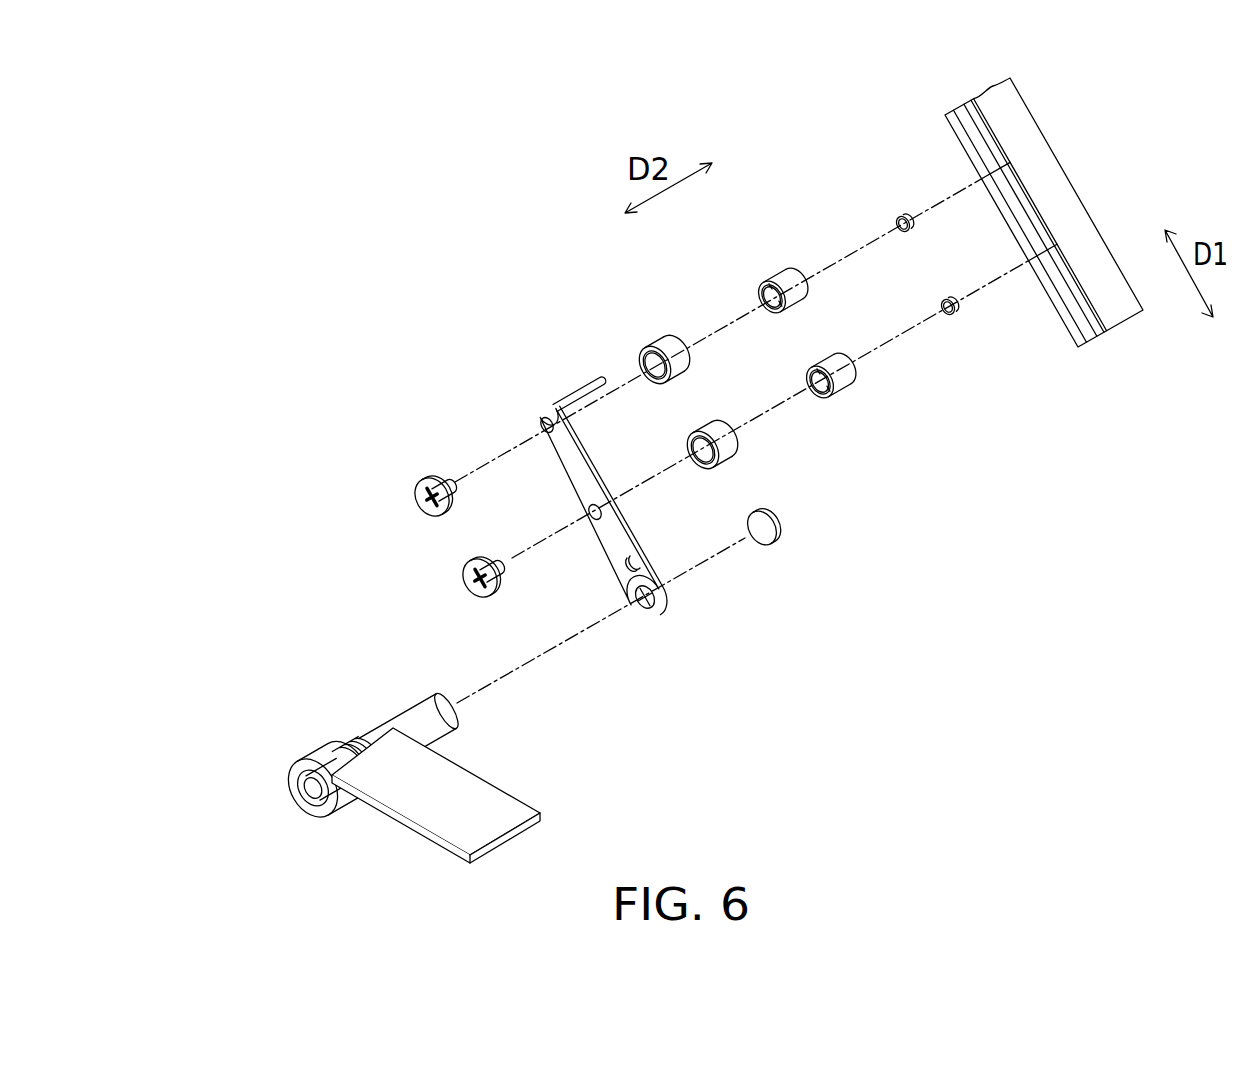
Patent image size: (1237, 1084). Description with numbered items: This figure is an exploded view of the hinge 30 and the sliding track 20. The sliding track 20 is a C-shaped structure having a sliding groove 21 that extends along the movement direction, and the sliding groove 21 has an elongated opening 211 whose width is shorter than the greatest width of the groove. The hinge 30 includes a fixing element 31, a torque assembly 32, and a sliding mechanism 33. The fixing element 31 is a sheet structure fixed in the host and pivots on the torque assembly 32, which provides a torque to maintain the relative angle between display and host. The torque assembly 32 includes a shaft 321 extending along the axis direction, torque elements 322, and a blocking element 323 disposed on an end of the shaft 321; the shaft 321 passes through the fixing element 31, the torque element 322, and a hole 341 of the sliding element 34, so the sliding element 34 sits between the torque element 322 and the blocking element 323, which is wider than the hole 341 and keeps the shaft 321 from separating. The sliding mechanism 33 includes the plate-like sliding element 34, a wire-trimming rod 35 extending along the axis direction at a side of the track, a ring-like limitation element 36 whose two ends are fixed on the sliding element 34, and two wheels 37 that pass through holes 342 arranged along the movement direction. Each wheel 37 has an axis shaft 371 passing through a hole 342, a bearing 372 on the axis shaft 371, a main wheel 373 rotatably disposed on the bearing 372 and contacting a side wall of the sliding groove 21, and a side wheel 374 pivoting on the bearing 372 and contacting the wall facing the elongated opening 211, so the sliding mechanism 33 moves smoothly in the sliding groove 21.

The sliding track 20 is at (995, 226).
The sliding groove 21 is at (1080, 316).
The elongated opening 211 is at (983, 140).
The hinge 30 is at (397, 314).
The fixing element 31 is at (498, 808).
The torque assembly 32 is at (459, 741).
The shaft 321 is at (458, 710).
The torque elements 322 is at (342, 735).
The blocking element 323 is at (762, 545).
The sliding mechanism 33 is at (532, 343).
The sliding element 34 is at (549, 520).
The hole 341 is at (643, 615).
The holes 342 is at (540, 426).
The wire-trimming rod 35 is at (597, 388).
The limitation element 36 is at (622, 570).
The wheels 37 is at (414, 487).
The axis shaft 371 is at (440, 477).
The bearing 372 is at (783, 283).
The main wheel 373 is at (660, 343).
The side wheel 374 is at (893, 225).